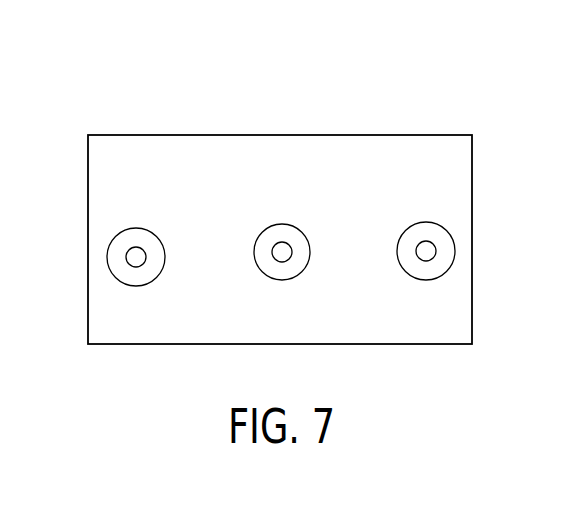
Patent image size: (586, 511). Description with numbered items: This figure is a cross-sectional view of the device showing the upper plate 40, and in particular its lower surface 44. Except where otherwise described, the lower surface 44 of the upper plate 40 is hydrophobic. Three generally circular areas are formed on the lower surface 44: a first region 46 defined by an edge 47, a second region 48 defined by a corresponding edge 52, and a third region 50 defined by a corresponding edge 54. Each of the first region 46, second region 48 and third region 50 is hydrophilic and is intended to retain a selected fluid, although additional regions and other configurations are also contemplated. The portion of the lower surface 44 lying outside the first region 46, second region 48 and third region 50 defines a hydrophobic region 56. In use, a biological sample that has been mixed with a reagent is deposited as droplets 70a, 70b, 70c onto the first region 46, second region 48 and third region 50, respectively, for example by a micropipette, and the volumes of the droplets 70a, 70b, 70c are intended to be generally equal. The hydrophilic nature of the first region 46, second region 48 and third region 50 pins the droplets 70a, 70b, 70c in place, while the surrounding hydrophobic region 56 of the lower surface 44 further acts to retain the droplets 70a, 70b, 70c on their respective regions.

The upper plate 40 is at (123, 126).
The lower surface 44 is at (265, 169).
The first region 46 is at (166, 233).
The edge 47 is at (113, 244).
The second region 48 is at (310, 227).
The third region 50 is at (456, 222).
The edge 52 is at (261, 240).
The edge 54 is at (404, 238).
The hydrophobic region 56 is at (208, 323).
The droplet 70a is at (138, 277).
The droplet 70b is at (285, 273).
The droplet 70c is at (430, 273).